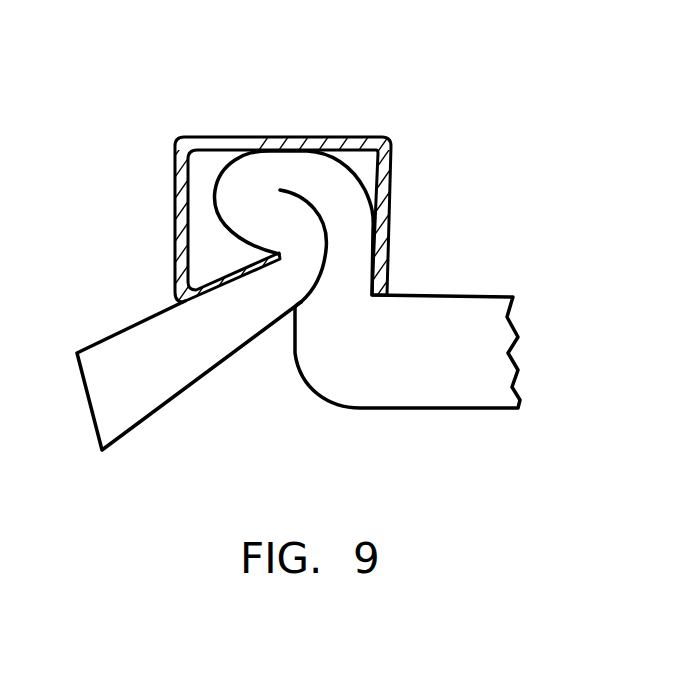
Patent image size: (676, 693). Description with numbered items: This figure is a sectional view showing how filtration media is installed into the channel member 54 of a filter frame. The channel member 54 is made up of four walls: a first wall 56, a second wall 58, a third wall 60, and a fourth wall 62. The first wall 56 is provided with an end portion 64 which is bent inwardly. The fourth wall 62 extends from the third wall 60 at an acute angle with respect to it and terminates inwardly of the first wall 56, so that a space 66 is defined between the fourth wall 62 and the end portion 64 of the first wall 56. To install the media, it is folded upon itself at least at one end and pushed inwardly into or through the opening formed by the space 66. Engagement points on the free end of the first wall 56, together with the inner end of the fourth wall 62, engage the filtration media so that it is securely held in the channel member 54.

The channel member 54 is at (247, 118).
The second wall 58 is at (318, 137).
The first wall 56 is at (392, 178).
The third wall 60 is at (173, 223).
The end portion 64 is at (388, 260).
The fourth wall 62 is at (220, 287).
The space 66 is at (313, 230).